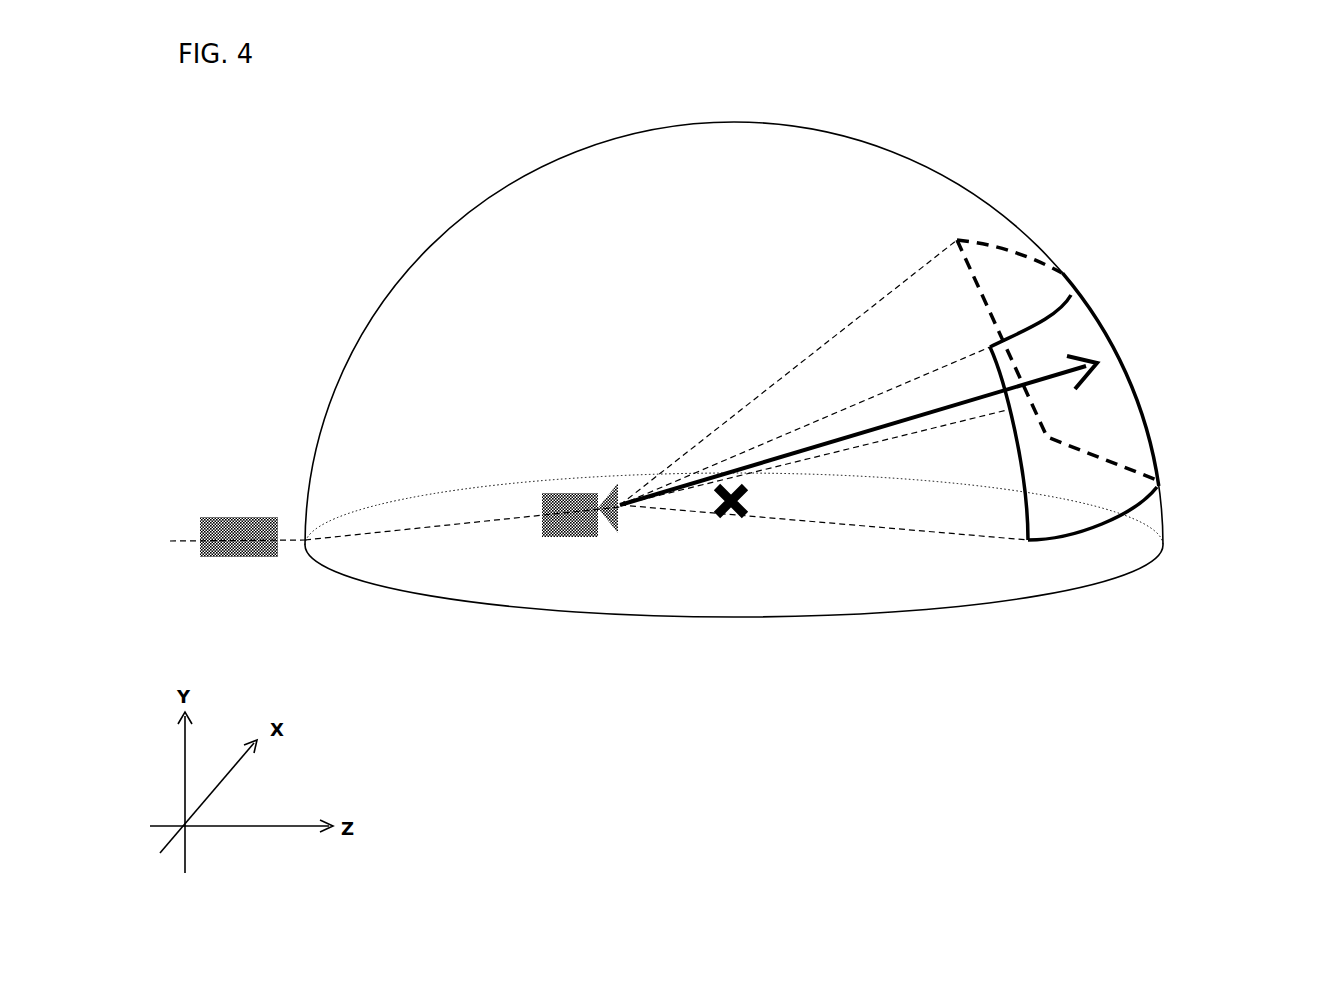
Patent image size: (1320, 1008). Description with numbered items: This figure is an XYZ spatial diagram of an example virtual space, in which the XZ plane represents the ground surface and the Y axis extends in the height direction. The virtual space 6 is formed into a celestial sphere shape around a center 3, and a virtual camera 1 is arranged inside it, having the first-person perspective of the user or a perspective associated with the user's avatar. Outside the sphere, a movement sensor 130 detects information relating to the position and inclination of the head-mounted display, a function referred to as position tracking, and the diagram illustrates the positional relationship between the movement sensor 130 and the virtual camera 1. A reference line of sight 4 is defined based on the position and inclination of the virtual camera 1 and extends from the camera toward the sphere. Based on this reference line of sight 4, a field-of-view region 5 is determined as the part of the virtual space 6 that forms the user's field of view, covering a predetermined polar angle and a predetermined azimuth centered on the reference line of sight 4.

The virtual camera 1 is at (560, 495).
The center 3 is at (740, 508).
The reference line of sight 4 is at (865, 432).
The field-of-view region 5 is at (1122, 433).
The virtual space 6 is at (442, 232).
The movement sensor 130 is at (247, 515).